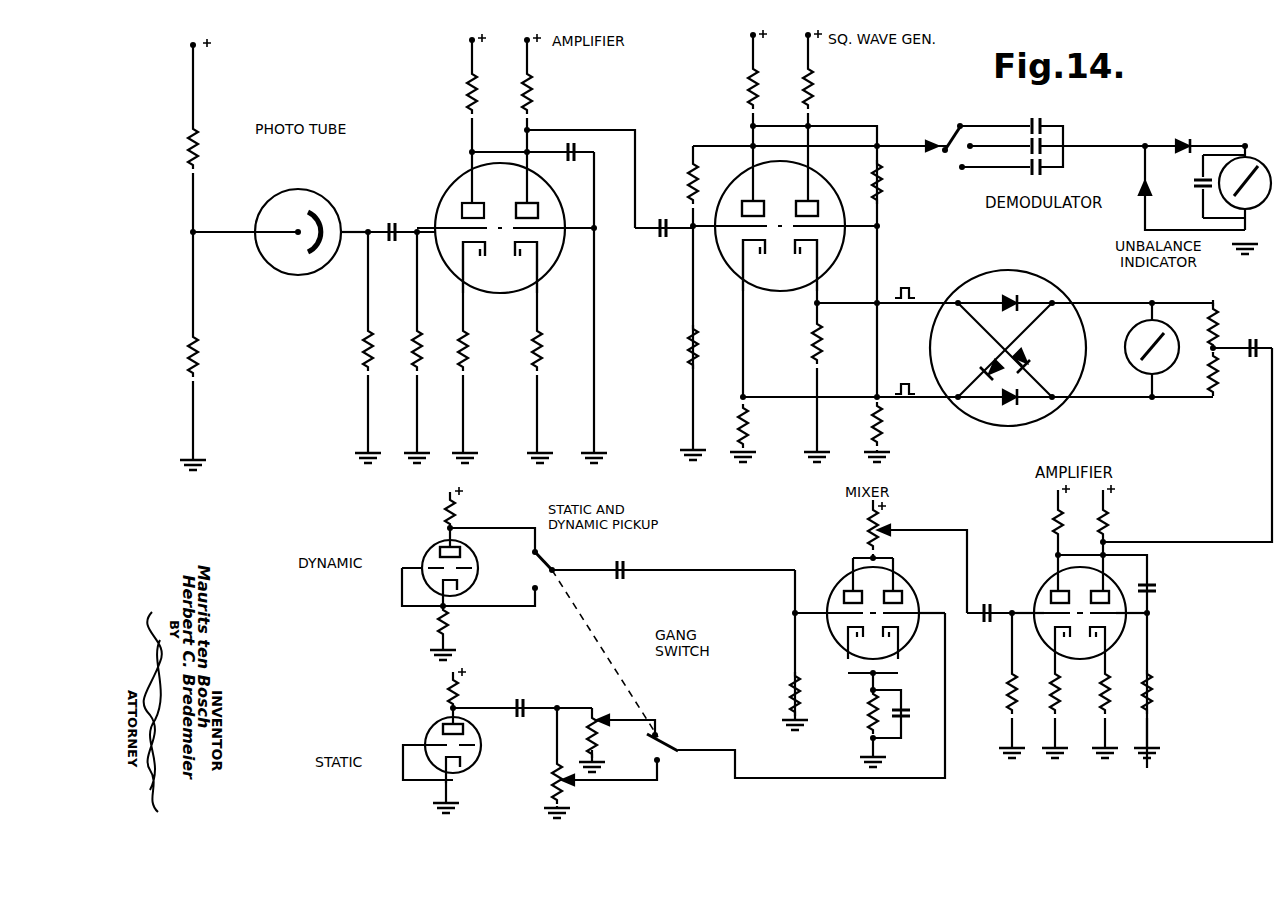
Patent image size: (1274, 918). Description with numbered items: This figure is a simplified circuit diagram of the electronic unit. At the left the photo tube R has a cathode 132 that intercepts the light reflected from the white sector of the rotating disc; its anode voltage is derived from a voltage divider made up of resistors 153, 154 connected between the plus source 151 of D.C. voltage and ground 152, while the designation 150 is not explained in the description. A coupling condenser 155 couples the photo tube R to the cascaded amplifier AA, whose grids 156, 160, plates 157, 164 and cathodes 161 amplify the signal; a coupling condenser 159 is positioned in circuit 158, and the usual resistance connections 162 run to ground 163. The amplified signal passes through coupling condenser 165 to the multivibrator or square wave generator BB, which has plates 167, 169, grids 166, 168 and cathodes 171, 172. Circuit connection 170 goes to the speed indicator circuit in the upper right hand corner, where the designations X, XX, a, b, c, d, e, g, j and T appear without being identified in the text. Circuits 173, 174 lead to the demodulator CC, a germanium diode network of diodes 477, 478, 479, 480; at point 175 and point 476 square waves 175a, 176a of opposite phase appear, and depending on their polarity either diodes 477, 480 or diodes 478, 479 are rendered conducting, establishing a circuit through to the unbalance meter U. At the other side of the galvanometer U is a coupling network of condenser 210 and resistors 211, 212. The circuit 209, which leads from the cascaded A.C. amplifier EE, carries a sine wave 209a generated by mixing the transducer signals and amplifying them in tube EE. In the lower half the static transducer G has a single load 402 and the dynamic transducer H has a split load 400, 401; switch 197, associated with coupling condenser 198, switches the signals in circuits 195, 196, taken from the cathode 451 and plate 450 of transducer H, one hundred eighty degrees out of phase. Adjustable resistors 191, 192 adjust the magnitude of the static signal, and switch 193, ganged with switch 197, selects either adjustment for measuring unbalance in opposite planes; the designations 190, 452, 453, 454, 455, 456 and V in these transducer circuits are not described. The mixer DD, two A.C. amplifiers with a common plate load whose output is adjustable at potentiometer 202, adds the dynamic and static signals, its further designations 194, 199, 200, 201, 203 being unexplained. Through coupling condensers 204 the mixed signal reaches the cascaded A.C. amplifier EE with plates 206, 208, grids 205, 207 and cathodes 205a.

The plus source 151 is at (190, 47).
The resistor 153 is at (190, 150).
The resistor 154 is at (190, 350).
The ground 152 is at (190, 472).
The conductor 150 is at (258, 240).
The cathode 132 is at (317, 215).
The coupling condenser 155 is at (392, 221).
The plate 157 is at (464, 204).
The ground 163 is at (529, 128).
The circuit 158 is at (571, 142).
The coupling condenser 159 is at (590, 130).
The plate 164 is at (538, 212).
The cathodes 161 is at (520, 249).
The grid 156 is at (462, 262).
The grid 160 is at (540, 262).
The resistance connections 162 is at (536, 352).
The coupling condenser 165 is at (662, 243).
The grid 166 is at (742, 258).
The plate 167 is at (758, 203).
The plate 169 is at (820, 209).
The grid 168 is at (828, 252).
The cathode 171 is at (760, 250).
The cathode 172 is at (820, 256).
The circuit 173 is at (785, 396).
The circuit 174 is at (848, 308).
The point 175 is at (908, 305).
The square wave 175a is at (904, 286).
The square wave 176a is at (905, 382).
The point 476 is at (888, 403).
The circuit connection 170 is at (926, 145).
The germanium diode 477 is at (1012, 294).
The germanium diode 478 is at (1024, 362).
The germanium diode 479 is at (1010, 404).
The germanium diode 480 is at (978, 375).
The condenser 210 is at (1216, 312).
The resistor 211 is at (1214, 304).
The resistor 212 is at (1219, 388).
The sine wave 209a is at (1257, 360).
The circuit connection 209 is at (1271, 438).
The split load 400 is at (444, 510).
The anode lead 452 is at (454, 540).
The plate 450 is at (438, 554).
The cathode 451 is at (468, 580).
The split load 401 is at (440, 624).
The circuit 195 is at (505, 527).
The circuit 196 is at (501, 608).
The switch 197 is at (548, 562).
The coupling condenser 198 is at (624, 578).
The condenser 190 is at (525, 700).
The adjustable resistor 191 is at (600, 716).
The adjustable resistor 192 is at (566, 788).
The switch 193 is at (668, 745).
The single load 402 is at (448, 686).
The grid 454 is at (438, 745).
The anode of static pickup tube 453 is at (470, 730).
The cathode 455 is at (462, 762).
The ground connection 456 is at (446, 797).
The potentiometer 202 is at (862, 525).
The conductor 203 is at (930, 529).
The anode of mixer tube 200 is at (845, 592).
The anode of mixer tube 201 is at (905, 598).
The grid lead 194 is at (905, 616).
The grid resistor 199 is at (845, 622).
The coupling condensers 204 is at (987, 603).
The grid 205 is at (1048, 613).
The cathodes 205a is at (1100, 645).
The plate 206 is at (1050, 590).
The grid 207 is at (1112, 617).
The plate 208 is at (1156, 586).
The photo tube R is at (298, 189).
The cascaded amplifier AA is at (560, 185).
The square wave generator BB is at (814, 184).
The demodulator CC is at (1040, 213).
The mixer DD is at (903, 580).
The amplifier EE is at (1110, 572).
The dynamic transducer H is at (402, 580).
The static transducer G is at (440, 740).
The unbalance meter U is at (1156, 320).
The unbalance indicator meter T is at (1247, 211).
The gang switch V is at (605, 631).
The resistor X is at (880, 149).
The selector switch XX is at (952, 144).
The switch contact a is at (962, 126).
The switch contact b is at (972, 146).
The switch contact c is at (963, 168).
The condenser d is at (1043, 124).
The condenser e is at (1031, 148).
The conductor g is at (1248, 148).
The rectifier j is at (1182, 155).